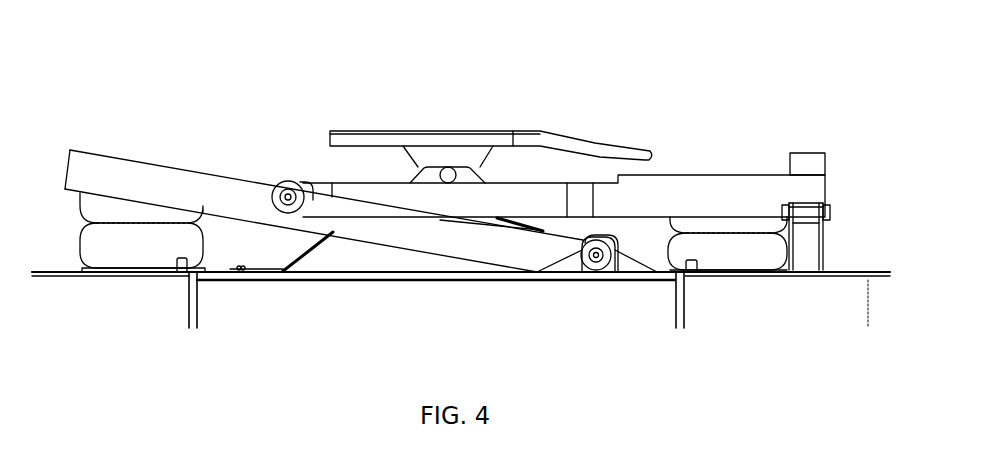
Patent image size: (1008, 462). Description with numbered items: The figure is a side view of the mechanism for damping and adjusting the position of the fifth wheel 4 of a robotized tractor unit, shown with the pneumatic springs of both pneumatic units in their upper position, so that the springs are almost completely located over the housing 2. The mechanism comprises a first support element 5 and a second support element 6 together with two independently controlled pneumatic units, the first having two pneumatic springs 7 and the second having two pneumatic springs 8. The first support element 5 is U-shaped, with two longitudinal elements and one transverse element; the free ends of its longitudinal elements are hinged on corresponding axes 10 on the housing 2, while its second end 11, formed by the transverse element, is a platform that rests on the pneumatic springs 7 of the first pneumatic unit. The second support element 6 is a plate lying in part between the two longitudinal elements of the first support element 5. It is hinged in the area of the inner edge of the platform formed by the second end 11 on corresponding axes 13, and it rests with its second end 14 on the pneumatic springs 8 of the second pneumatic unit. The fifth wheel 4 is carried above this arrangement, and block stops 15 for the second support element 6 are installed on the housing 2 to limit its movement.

The housing 2 is at (461, 300).
The fifth wheel 4 is at (443, 140).
The first support element 5 is at (220, 193).
The second support element 6 is at (668, 197).
The pneumatic springs 7 is at (140, 247).
The pneumatic springs 8 is at (712, 252).
The axes 10 is at (597, 257).
The second end 11 is at (98, 168).
The axes 13 is at (287, 195).
The second end 14 is at (770, 190).
The block stops 15 is at (803, 257).